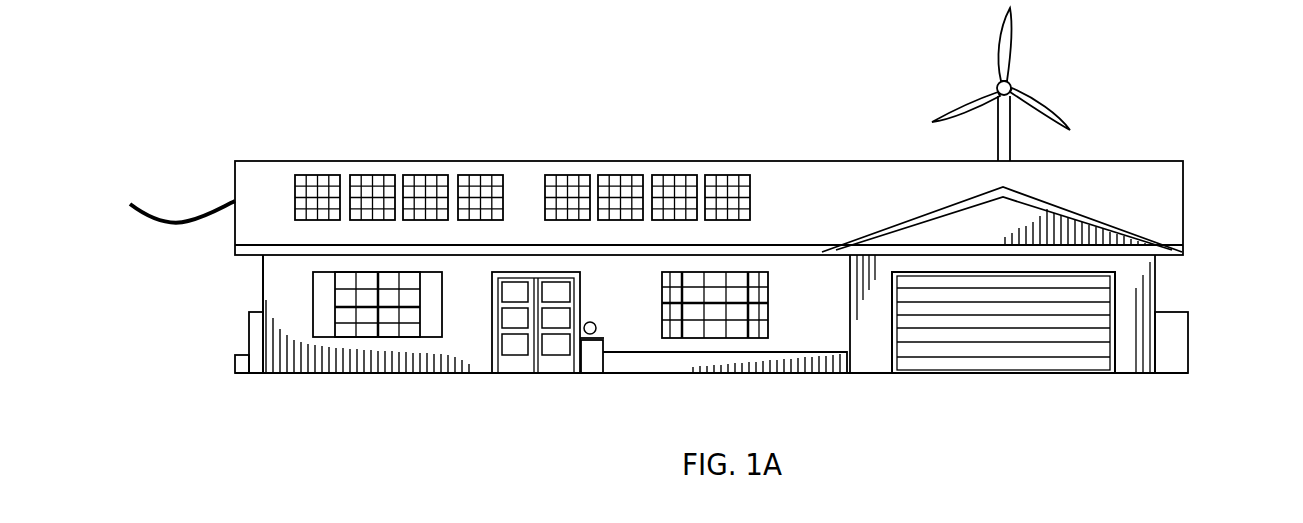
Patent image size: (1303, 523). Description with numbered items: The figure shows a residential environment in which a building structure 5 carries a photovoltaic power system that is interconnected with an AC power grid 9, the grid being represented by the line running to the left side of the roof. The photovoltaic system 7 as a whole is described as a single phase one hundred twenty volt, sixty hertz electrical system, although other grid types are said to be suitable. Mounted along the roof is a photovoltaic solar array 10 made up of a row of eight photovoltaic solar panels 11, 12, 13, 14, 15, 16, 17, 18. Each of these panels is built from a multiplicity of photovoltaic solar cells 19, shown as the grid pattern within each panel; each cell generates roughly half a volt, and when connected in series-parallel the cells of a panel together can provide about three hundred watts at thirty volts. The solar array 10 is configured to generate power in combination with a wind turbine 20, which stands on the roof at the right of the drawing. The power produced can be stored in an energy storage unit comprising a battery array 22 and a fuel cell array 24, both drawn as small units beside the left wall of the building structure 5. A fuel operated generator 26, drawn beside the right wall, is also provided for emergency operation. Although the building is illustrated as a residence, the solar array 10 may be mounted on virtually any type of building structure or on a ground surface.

The building structure 5 is at (262, 290).
The photovoltaic system 7 is at (178, 274).
The AC power grid 9 is at (191, 217).
The photovoltaic solar array 10 is at (262, 140).
The photovoltaic solar panel 11 is at (322, 180).
The photovoltaic solar panel 12 is at (376, 180).
The photovoltaic solar panel 13 is at (430, 180).
The photovoltaic solar panel 14 is at (481, 180).
The photovoltaic solar panel 15 is at (568, 180).
The photovoltaic solar panel 16 is at (622, 180).
The photovoltaic solar panel 17 is at (676, 180).
The photovoltaic solar panel 18 is at (726, 180).
The photovoltaic solar cell 19 is at (312, 200).
The wind turbine 20 is at (1013, 84).
The battery array 22 is at (235, 364).
The fuel cell array 24 is at (256, 335).
The fuel operated generator 26 is at (1172, 335).